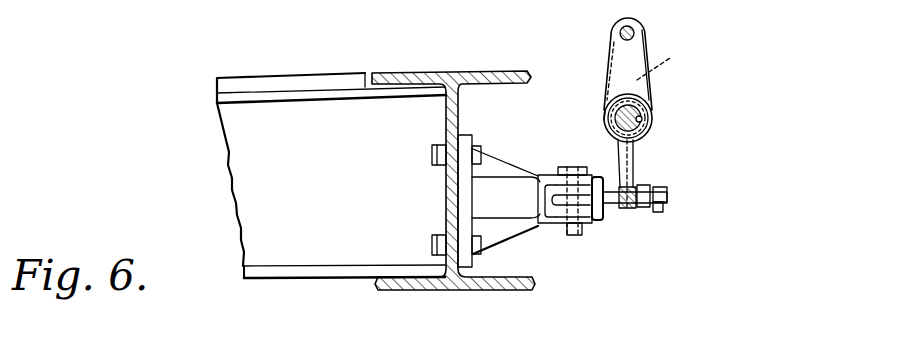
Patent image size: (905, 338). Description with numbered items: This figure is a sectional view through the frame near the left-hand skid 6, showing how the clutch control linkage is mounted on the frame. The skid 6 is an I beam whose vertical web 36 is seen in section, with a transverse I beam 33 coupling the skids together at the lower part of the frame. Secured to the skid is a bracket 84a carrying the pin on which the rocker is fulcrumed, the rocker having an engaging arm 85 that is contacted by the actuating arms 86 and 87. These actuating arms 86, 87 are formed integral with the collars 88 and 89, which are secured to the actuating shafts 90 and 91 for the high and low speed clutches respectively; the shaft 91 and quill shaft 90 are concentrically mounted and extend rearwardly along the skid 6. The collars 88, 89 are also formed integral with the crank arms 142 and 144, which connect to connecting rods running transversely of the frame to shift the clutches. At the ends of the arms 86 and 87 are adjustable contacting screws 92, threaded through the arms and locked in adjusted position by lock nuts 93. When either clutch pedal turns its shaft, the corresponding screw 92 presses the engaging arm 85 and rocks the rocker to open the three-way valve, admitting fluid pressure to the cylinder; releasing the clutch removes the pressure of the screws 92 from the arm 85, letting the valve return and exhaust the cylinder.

The skid 6 is at (465, 78).
The transverse I beam 33 is at (289, 270).
The vertical web 36 is at (235, 149).
The bracket 84a is at (498, 164).
The engaging arm 85 is at (608, 222).
The actuating arm 86 is at (616, 162).
The actuating arm 87 is at (640, 172).
The collar 88 is at (607, 113).
The collar 89 is at (651, 124).
The actuating shaft 90 is at (667, 63).
The actuating shaft 91 is at (652, 108).
The contacting screw 92 is at (652, 212).
The lock nut 93 is at (632, 212).
The crank arm 142 is at (650, 38).
The crank arm 144 is at (619, 34).